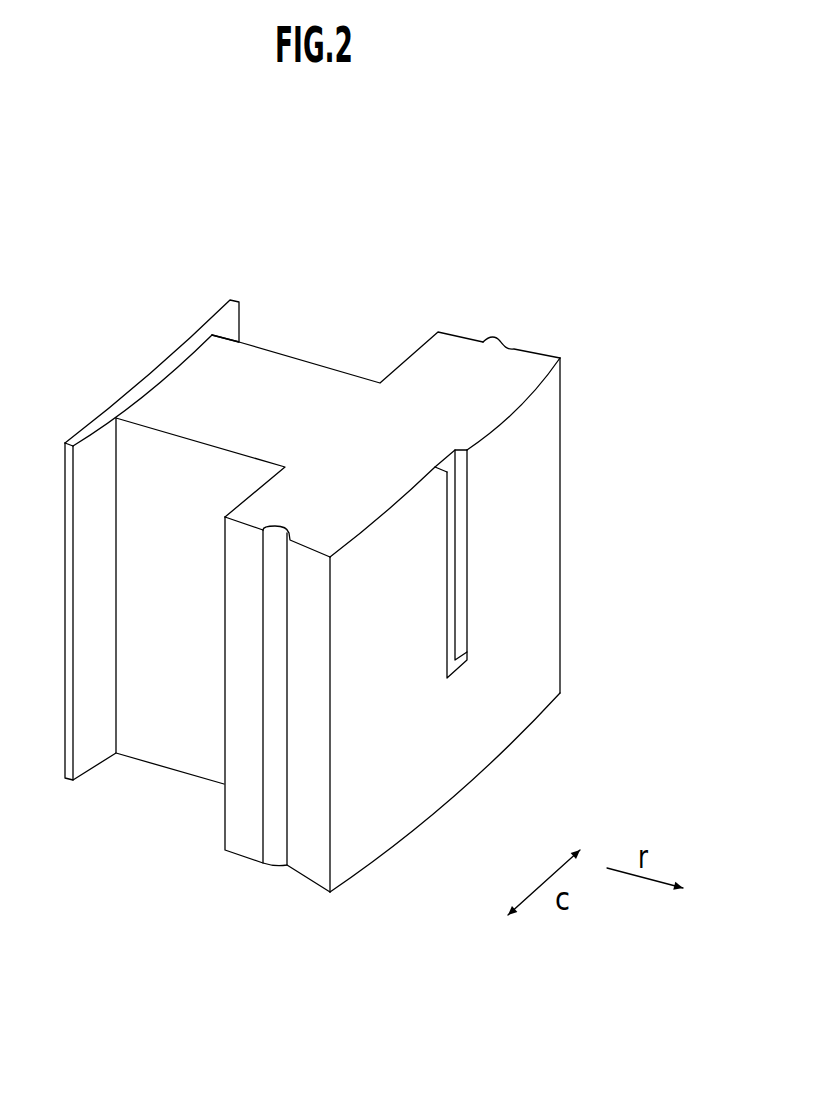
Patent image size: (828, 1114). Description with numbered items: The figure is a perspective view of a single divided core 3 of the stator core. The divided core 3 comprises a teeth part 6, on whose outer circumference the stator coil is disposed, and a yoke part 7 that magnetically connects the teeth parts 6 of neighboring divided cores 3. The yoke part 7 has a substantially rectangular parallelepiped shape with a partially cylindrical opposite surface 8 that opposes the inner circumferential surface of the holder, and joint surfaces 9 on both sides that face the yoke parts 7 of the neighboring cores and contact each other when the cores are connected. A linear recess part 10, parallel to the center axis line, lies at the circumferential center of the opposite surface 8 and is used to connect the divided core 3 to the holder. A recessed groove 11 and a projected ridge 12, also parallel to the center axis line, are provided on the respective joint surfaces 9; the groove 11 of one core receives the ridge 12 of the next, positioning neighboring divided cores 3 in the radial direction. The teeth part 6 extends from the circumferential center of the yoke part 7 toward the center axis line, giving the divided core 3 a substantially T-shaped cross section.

The divided core 3 is at (605, 273).
The teeth part 6 is at (295, 355).
The yoke part 7 is at (563, 422).
The opposite surface 8 is at (527, 558).
The joint surface 9 is at (247, 790).
The recess part 10 is at (470, 637).
The recessed groove 11 is at (284, 716).
The projected ridge 12 is at (498, 335).